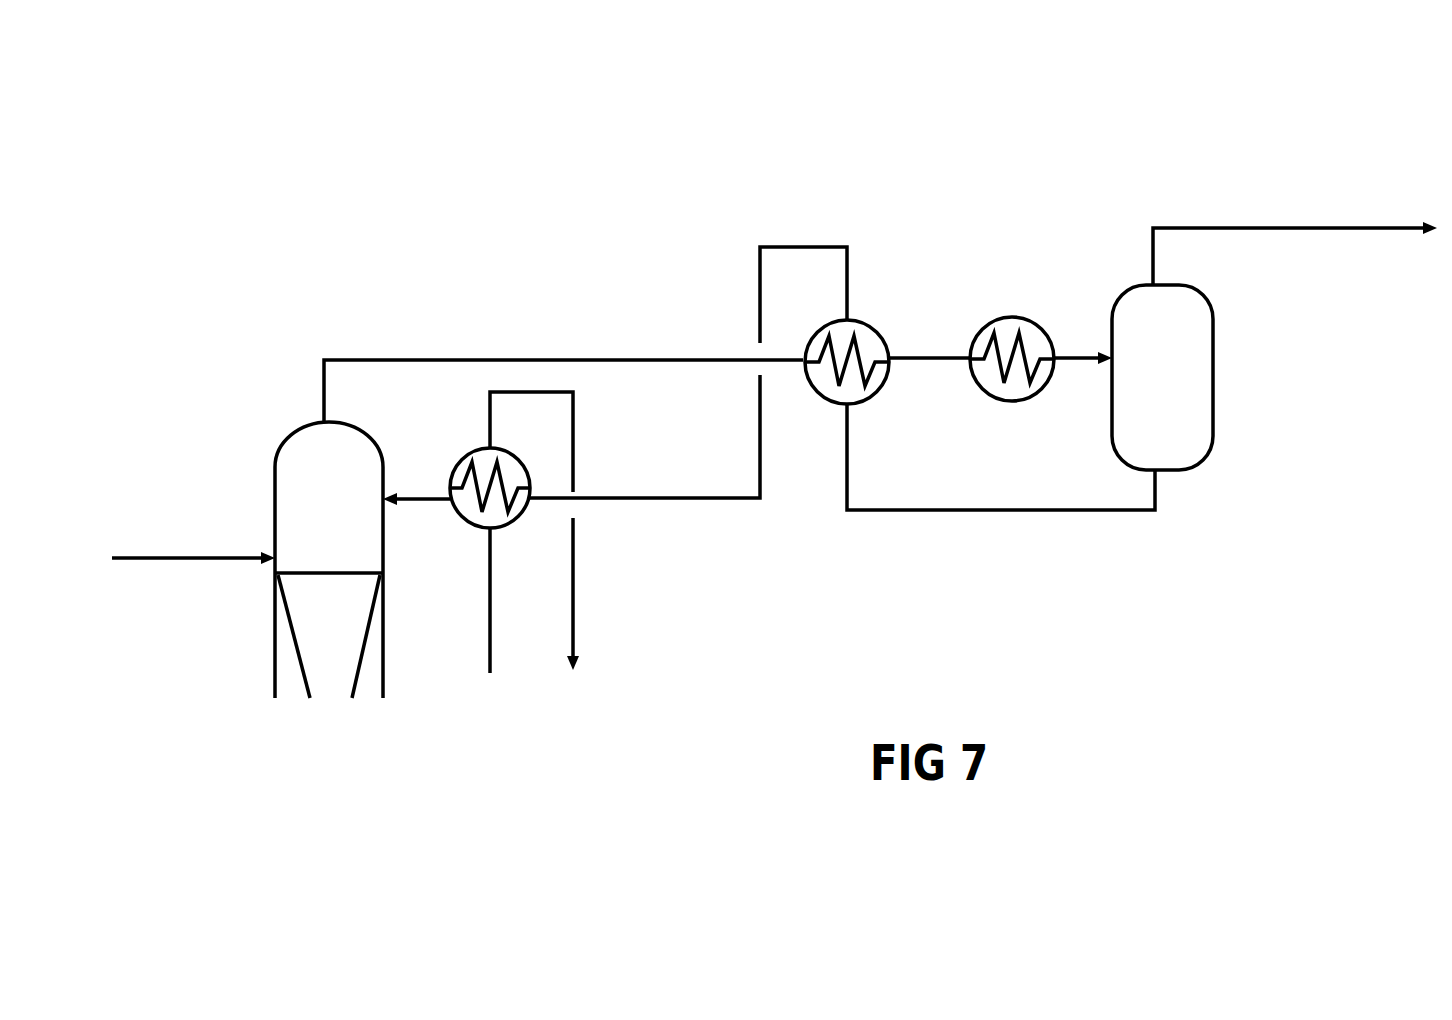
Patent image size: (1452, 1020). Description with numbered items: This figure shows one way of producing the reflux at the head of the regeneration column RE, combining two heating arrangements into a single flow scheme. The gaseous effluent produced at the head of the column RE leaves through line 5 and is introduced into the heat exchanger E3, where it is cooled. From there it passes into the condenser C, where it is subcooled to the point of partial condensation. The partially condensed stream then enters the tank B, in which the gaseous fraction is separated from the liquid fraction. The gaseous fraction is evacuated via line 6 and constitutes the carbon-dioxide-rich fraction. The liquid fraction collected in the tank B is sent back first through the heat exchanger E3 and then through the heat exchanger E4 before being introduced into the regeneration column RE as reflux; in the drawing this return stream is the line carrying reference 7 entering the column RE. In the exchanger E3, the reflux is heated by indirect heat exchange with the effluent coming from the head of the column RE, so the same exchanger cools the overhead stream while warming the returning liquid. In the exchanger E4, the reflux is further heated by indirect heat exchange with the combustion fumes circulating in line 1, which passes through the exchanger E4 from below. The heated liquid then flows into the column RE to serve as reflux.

The regeneration column RE is at (383, 697).
The line 5 is at (324, 383).
The recycle stream to reactor 7 is at (420, 503).
The heat exchanger E4 is at (465, 448).
The line 1 is at (490, 608).
The heat exchanger E3 is at (870, 400).
The condenser C is at (1012, 317).
The tank B is at (1213, 380).
The line 6 is at (1292, 228).